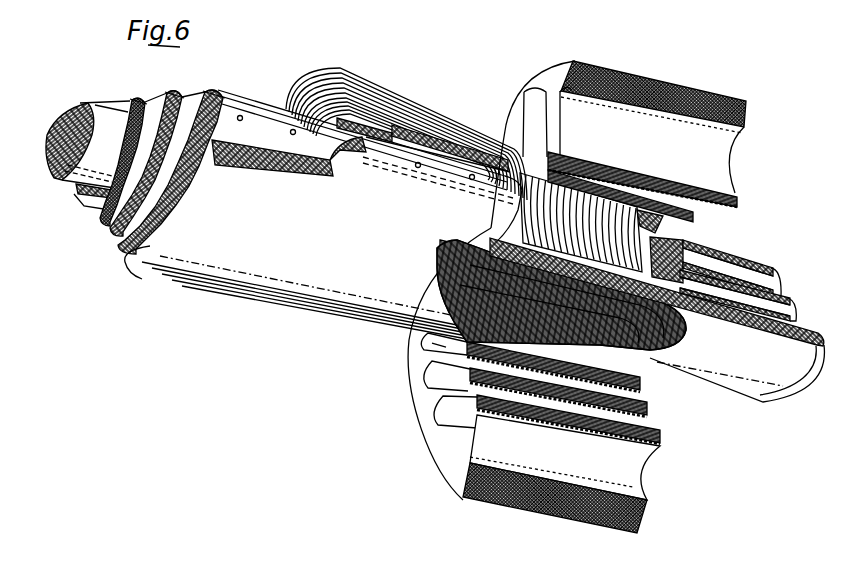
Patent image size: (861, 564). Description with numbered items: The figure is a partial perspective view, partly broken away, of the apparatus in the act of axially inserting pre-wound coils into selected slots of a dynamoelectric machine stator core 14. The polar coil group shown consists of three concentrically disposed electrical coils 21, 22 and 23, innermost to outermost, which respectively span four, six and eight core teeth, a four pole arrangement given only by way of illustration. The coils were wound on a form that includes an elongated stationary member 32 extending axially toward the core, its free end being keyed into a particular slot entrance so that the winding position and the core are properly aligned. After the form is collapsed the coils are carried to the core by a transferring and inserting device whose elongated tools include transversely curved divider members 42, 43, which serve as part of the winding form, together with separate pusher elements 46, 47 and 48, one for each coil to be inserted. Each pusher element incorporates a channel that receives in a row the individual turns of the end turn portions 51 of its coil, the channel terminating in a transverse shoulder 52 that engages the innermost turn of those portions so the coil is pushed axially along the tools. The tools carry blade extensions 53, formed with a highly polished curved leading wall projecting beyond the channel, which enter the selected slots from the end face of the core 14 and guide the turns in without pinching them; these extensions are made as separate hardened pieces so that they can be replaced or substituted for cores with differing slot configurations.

The stator core 14 is at (745, 118).
The innermost electrical coil 21 is at (460, 140).
The intermediate electrical coil 22 is at (393, 120).
The outermost electrical coil 23 is at (380, 88).
The elongated stationary member 32 is at (63, 125).
The divider member 42 is at (108, 220).
The divider member 43 is at (163, 253).
The pusher element 46 is at (90, 203).
The pusher element 47 is at (116, 226).
The pusher element 48 is at (190, 216).
The end turn portions 51 is at (652, 226).
The transverse shoulder 52 is at (437, 268).
The blade extensions 53 is at (218, 93).